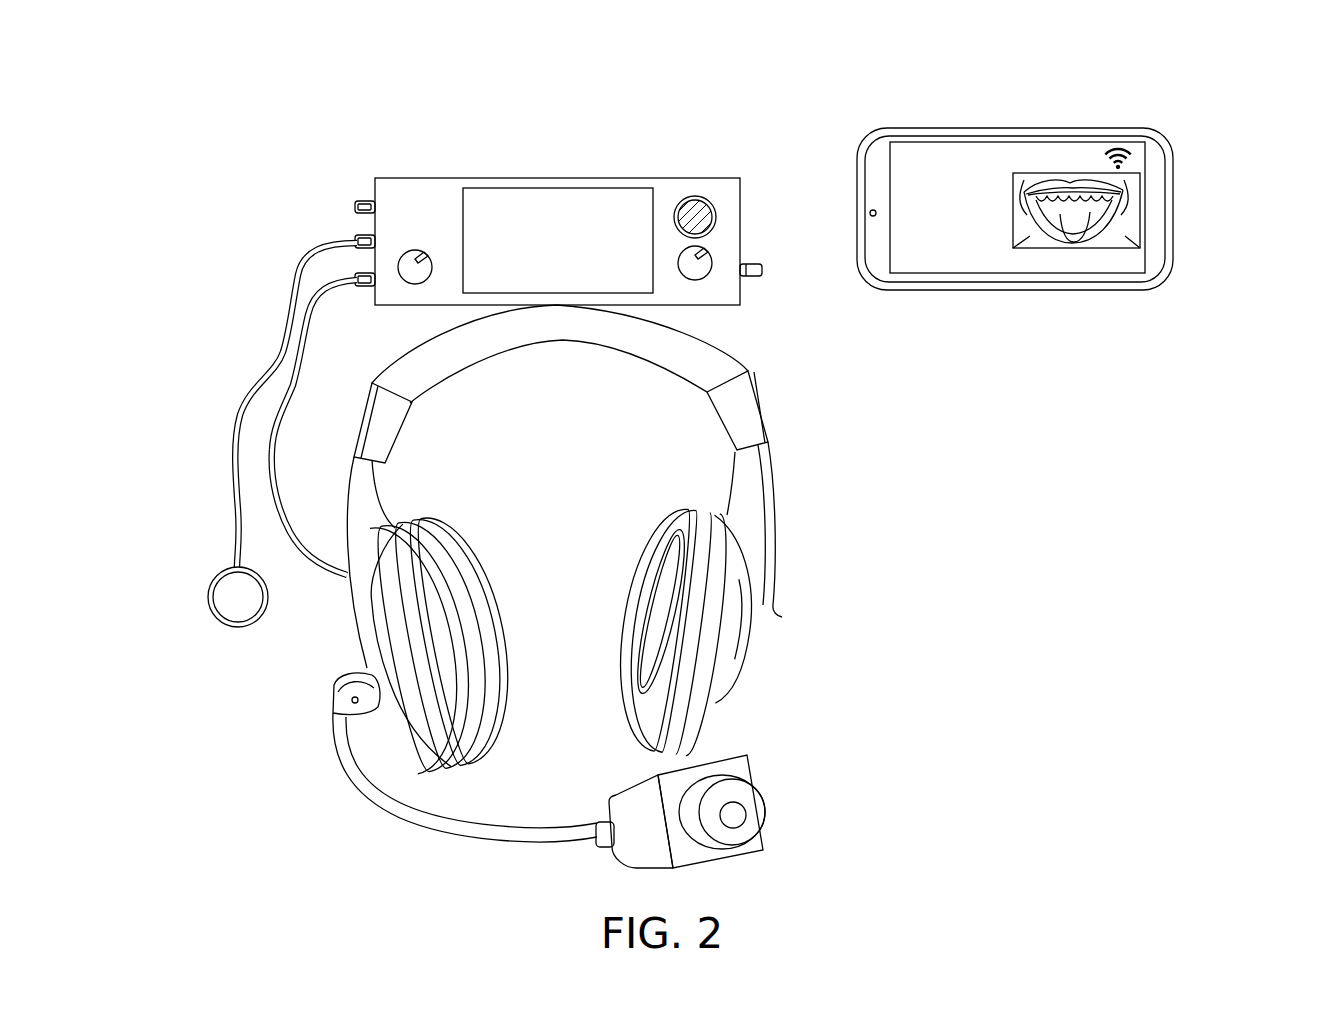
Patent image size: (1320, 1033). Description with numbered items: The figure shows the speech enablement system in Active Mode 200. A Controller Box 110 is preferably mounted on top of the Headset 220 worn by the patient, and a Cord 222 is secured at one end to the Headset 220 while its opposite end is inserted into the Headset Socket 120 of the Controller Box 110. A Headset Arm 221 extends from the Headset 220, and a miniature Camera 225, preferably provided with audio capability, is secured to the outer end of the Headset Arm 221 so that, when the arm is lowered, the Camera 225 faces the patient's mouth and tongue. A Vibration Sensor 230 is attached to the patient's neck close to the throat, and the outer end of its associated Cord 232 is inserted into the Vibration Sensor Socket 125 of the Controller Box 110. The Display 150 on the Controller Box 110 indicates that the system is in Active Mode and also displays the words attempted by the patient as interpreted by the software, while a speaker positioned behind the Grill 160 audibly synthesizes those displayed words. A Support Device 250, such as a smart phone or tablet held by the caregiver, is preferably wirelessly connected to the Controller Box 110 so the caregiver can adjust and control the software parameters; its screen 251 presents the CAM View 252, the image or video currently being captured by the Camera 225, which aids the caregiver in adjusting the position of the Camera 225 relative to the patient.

The Active Mode 200 is at (281, 64).
The Controller Box 110 is at (392, 178).
The Headset Socket 120 is at (364, 290).
The Vibration Sensor Socket 125 is at (355, 224).
The Display 150 is at (562, 200).
The Grill 160 is at (693, 194).
The Headset 220 is at (760, 617).
The Headset Arm 221 is at (392, 814).
The Cord 222 is at (280, 362).
The Camera 225 is at (770, 808).
The Vibration Sensor 230 is at (216, 577).
The Cord 232 is at (296, 263).
The Support Device 250 is at (1118, 130).
The screen 251 is at (955, 242).
The CAM View 252 is at (1110, 231).